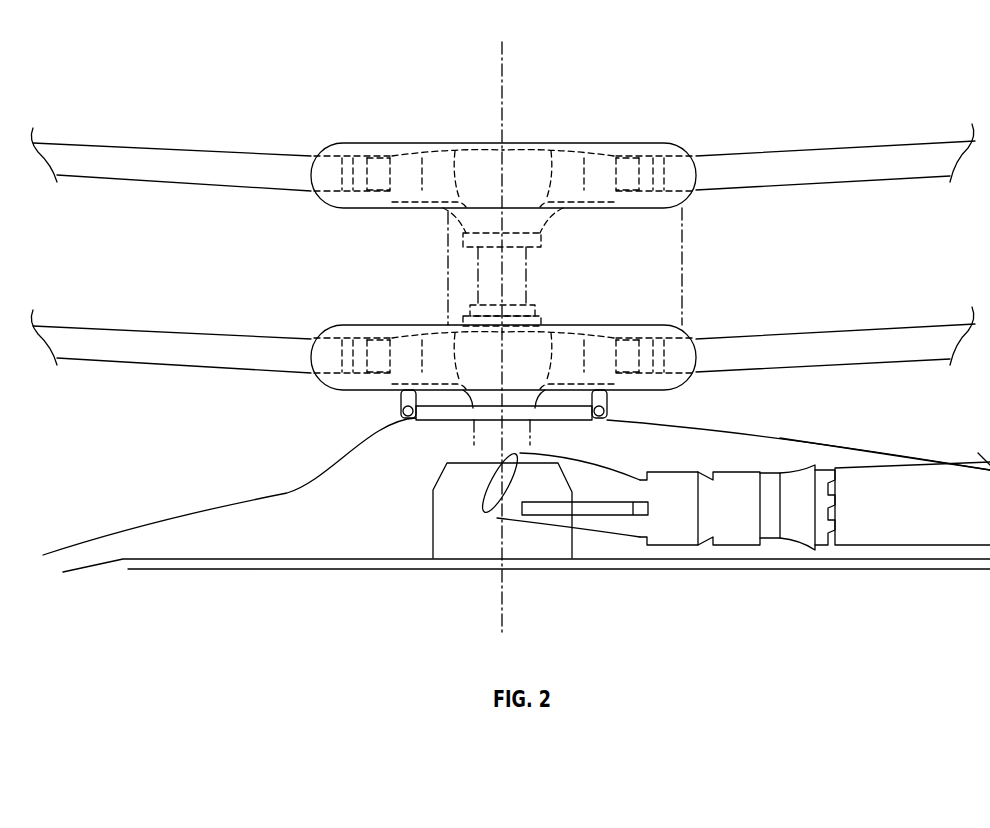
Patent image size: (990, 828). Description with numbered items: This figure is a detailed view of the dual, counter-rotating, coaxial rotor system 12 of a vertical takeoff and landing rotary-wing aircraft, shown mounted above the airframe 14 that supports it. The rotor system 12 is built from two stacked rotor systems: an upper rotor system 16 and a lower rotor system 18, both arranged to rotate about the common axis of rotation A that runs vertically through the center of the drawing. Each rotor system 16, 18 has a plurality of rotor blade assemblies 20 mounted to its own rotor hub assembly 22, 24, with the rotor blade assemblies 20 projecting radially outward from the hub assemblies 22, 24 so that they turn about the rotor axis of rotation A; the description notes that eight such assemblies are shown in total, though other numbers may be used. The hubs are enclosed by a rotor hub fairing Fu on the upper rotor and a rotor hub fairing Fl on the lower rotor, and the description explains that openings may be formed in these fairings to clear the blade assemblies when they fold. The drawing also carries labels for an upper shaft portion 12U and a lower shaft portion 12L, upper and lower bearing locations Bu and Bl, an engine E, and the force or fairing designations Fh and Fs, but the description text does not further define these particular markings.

The dual, counter-rotating, coaxial rotor system 12 is at (315, 413).
The upper rotor shaft 12U is at (490, 262).
The lower rotor shaft 12L is at (462, 325).
The airframe 14 is at (260, 559).
The upper rotor system 16 is at (541, 153).
The lower rotor system 18 is at (705, 322).
The rotor blade assemblies 20 is at (872, 340).
The rotor hub assembly 22 is at (535, 175).
The rotor hub assembly 24 is at (533, 378).
The axis of rotation A is at (505, 62).
The upper bearing Bu is at (545, 238).
The lower bearing Bl is at (538, 318).
The engine E is at (674, 525).
The rotor hub fairing Fu is at (417, 107).
The hub force Fh is at (300, 246).
The shaft force Fs is at (684, 262).
The rotor hub fairing Fl is at (357, 318).